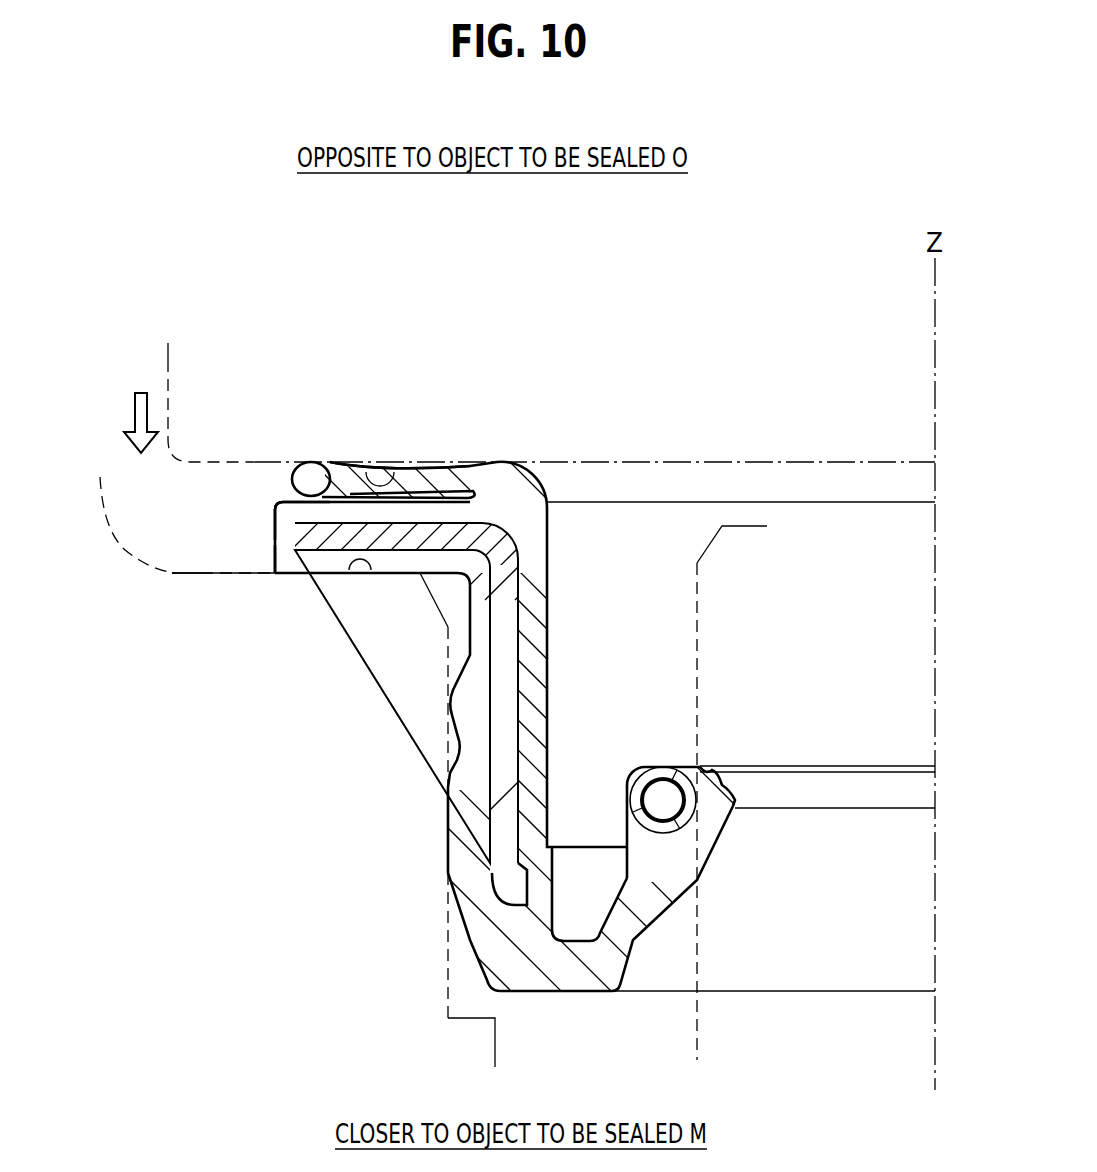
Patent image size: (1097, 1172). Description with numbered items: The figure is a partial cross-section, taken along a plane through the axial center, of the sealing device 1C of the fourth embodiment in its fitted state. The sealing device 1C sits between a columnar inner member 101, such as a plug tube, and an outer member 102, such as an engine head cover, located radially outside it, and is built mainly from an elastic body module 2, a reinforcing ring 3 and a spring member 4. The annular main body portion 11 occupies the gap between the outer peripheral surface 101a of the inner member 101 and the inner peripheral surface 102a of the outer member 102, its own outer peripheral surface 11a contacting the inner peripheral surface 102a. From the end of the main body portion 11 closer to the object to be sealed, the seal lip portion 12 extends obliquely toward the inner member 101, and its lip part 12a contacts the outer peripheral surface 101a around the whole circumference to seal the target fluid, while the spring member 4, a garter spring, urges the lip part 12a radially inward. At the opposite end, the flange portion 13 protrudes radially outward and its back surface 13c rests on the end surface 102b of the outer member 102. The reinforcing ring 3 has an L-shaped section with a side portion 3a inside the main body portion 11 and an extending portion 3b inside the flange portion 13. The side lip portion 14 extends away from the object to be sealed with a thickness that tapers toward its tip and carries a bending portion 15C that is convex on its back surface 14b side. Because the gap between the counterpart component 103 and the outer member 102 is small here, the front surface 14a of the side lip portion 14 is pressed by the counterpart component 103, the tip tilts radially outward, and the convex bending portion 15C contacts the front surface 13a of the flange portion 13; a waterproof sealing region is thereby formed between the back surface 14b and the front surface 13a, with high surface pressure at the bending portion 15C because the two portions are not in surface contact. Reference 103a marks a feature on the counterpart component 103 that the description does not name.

The sealing device 1C is at (747, 446).
The elastic body module 2 is at (440, 727).
The reinforcing ring 3 is at (482, 781).
The side portion 3a is at (497, 823).
The extending portion 3b is at (338, 543).
The spring member 4 is at (673, 826).
The main body portion 11 is at (547, 793).
The outer peripheral surface 11a is at (447, 853).
The seal lip portion 12 is at (632, 940).
The lip part 12a is at (737, 800).
The flange portion 13 is at (278, 502).
The front surface 13a is at (285, 500).
The back surface 13c is at (281, 574).
The side lip portion 14 is at (437, 478).
The front surface 14a is at (572, 485).
The back surface 14b is at (320, 470).
The bending portion 15C is at (360, 528).
The inner member 101 is at (695, 642).
The outer peripheral surface 101a is at (695, 718).
The outer member 102 is at (200, 572).
The inner peripheral surface 102a is at (450, 937).
The end surface 102b is at (258, 575).
The counterpart component 103 is at (168, 350).
The contact portion of cover member 103a is at (398, 460).